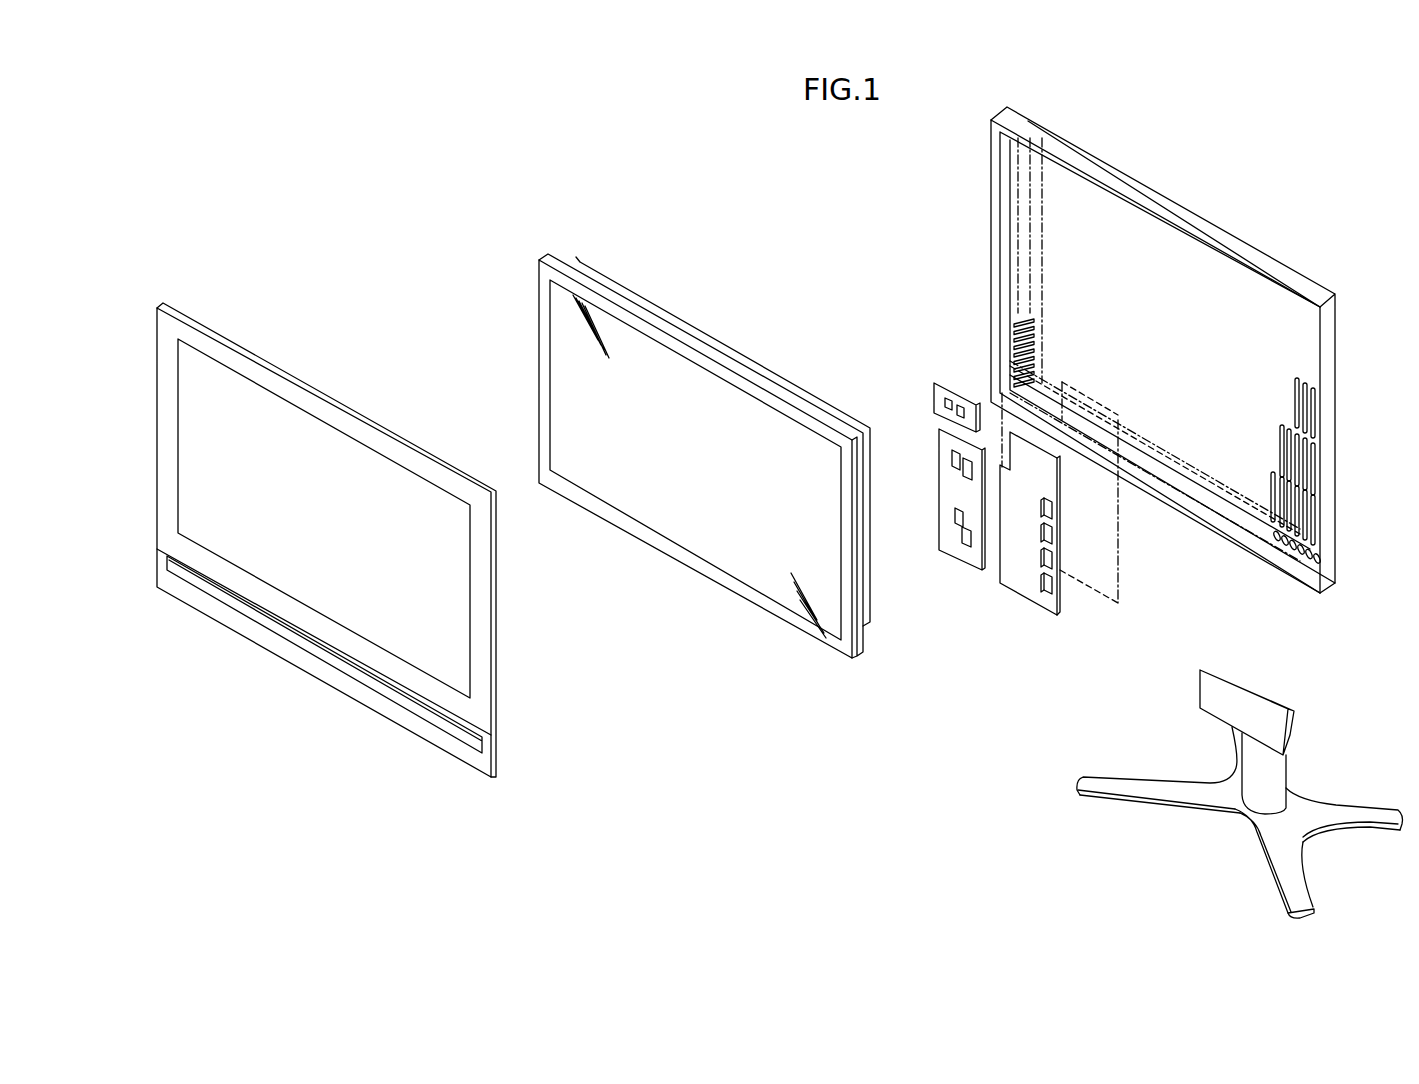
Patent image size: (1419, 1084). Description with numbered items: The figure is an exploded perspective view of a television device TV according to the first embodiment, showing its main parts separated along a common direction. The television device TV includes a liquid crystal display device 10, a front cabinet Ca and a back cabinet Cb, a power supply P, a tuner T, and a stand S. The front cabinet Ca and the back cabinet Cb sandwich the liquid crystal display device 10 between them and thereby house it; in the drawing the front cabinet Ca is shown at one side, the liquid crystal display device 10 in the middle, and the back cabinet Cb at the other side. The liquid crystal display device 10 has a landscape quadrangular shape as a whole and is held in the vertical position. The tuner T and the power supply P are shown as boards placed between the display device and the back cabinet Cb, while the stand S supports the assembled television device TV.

The television device TV is at (729, 181).
The front cabinet Ca is at (310, 384).
The back cabinet Cb is at (1157, 194).
The liquid crystal display device 10 is at (650, 300).
The tuner T is at (955, 558).
The power supply P is at (1022, 597).
The stand S is at (1152, 805).